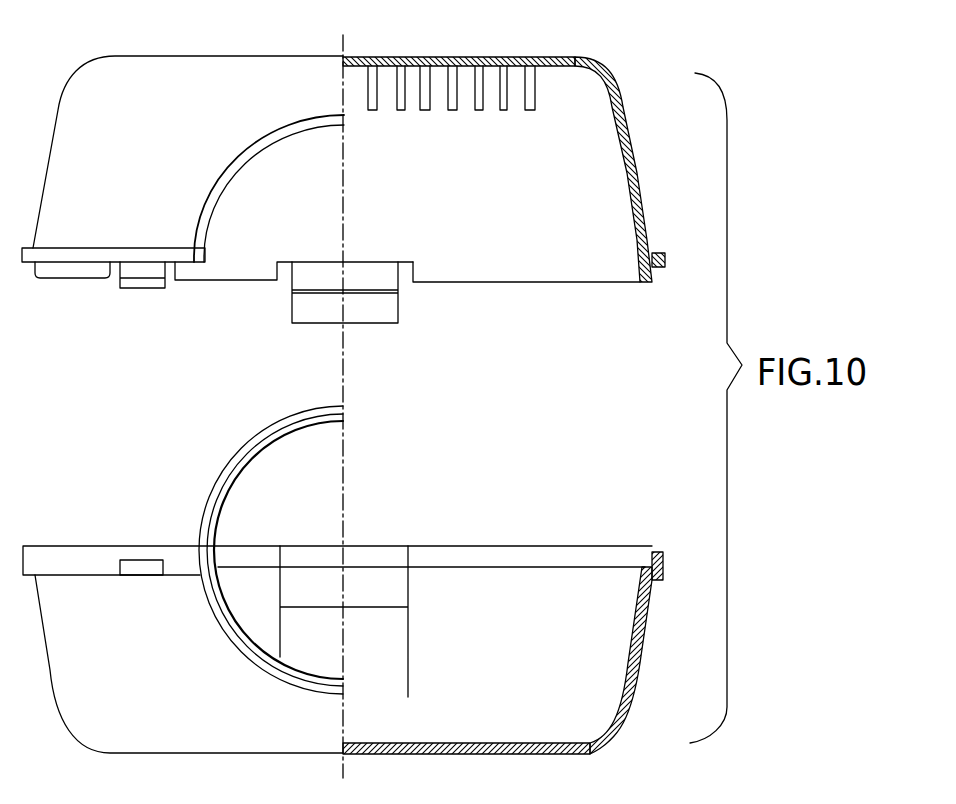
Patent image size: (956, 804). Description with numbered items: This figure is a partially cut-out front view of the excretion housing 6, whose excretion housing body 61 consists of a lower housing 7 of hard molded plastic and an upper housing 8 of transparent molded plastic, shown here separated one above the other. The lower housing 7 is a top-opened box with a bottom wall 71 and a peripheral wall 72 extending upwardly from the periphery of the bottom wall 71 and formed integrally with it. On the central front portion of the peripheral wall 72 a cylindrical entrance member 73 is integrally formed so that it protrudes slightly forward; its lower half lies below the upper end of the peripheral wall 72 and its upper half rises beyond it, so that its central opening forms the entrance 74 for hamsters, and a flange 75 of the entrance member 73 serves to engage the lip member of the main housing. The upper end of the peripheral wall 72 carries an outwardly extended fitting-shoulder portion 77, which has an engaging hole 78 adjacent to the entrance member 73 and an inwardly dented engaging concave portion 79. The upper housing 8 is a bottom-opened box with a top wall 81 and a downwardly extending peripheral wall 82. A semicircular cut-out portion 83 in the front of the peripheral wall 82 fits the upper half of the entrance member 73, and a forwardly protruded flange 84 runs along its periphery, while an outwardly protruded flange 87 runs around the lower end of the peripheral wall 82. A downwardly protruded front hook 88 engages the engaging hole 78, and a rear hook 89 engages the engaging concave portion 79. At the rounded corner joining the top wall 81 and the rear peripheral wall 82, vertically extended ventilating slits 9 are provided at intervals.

The excretion housing 6 is at (648, 433).
The excretion housing body 61 is at (598, 368).
The lower housing 7 is at (547, 531).
The upper housing 8 is at (527, 301).
The ventilating slits 9 is at (373, 103).
The bottom wall 71 is at (472, 742).
The peripheral wall 72 is at (635, 640).
The cylindrical entrance member 73 is at (253, 625).
The entrance 74 is at (320, 528).
The flange 75 is at (210, 523).
The fitting-shoulder portion 77 is at (643, 556).
The engaging hole 78 is at (133, 563).
The engaging concave portion 79 is at (400, 558).
The top wall 81 is at (360, 53).
The peripheral wall 82 is at (633, 207).
The cut-out portion 83 is at (284, 147).
The forwardly protruded flange 84 is at (222, 182).
The outwardly protruded flange 87 is at (62, 257).
The front hook 88 is at (140, 277).
The rear hook 89 is at (293, 305).